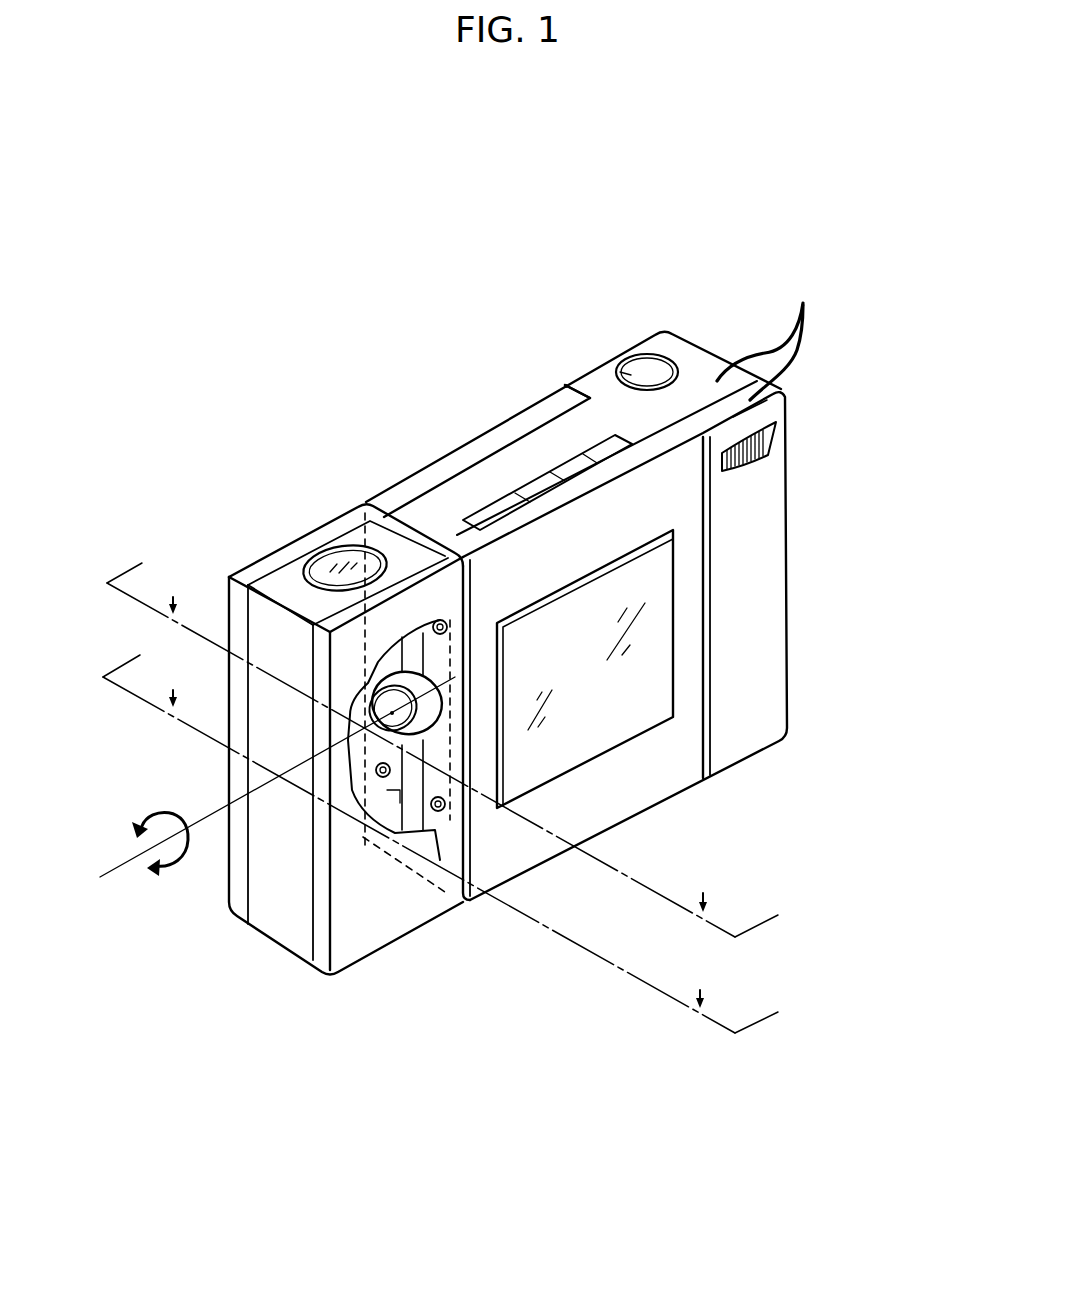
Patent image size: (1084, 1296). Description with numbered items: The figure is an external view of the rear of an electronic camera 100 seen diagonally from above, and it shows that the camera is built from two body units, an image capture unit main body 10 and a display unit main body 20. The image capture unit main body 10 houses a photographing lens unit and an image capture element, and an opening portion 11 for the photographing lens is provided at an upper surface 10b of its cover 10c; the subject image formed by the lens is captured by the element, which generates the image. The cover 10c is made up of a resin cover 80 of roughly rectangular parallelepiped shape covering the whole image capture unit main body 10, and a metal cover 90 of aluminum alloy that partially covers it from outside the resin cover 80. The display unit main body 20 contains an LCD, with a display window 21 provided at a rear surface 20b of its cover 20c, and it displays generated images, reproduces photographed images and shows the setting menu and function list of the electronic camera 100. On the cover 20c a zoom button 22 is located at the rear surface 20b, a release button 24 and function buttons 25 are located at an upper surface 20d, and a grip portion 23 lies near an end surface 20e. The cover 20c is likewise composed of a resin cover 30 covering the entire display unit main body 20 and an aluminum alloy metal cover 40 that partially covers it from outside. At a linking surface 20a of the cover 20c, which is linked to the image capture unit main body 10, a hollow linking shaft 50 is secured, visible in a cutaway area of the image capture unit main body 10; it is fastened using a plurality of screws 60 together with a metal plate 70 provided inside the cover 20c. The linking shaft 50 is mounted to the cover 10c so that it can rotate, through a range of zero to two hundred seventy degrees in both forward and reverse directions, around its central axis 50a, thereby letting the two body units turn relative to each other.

The electronic camera 100 is at (748, 104).
The image capture unit main body 10 is at (171, 416).
The upper surface 10b is at (283, 596).
The cover 10c is at (235, 1039).
The opening portion 11 is at (338, 561).
The display unit main body 20 is at (436, 293).
The linking surface 20a is at (477, 823).
The rear surface 20b is at (743, 738).
The cover 20c is at (396, 385).
The upper surface 20d is at (547, 433).
The end surface 20e is at (760, 658).
The display window 21 is at (657, 582).
The zoom button 22 is at (777, 435).
The grip portion 23 is at (612, 378).
The release button 24 is at (583, 384).
The function buttons 25 is at (470, 543).
The resin cover 30 is at (805, 320).
The metal cover 40 is at (513, 560).
The linking shaft 50 is at (672, 693).
The central axis 50a is at (122, 870).
The screws 60 is at (436, 622).
The metal plate 70 is at (366, 850).
The resin cover 80 is at (287, 890).
The metal cover 90 is at (321, 961).